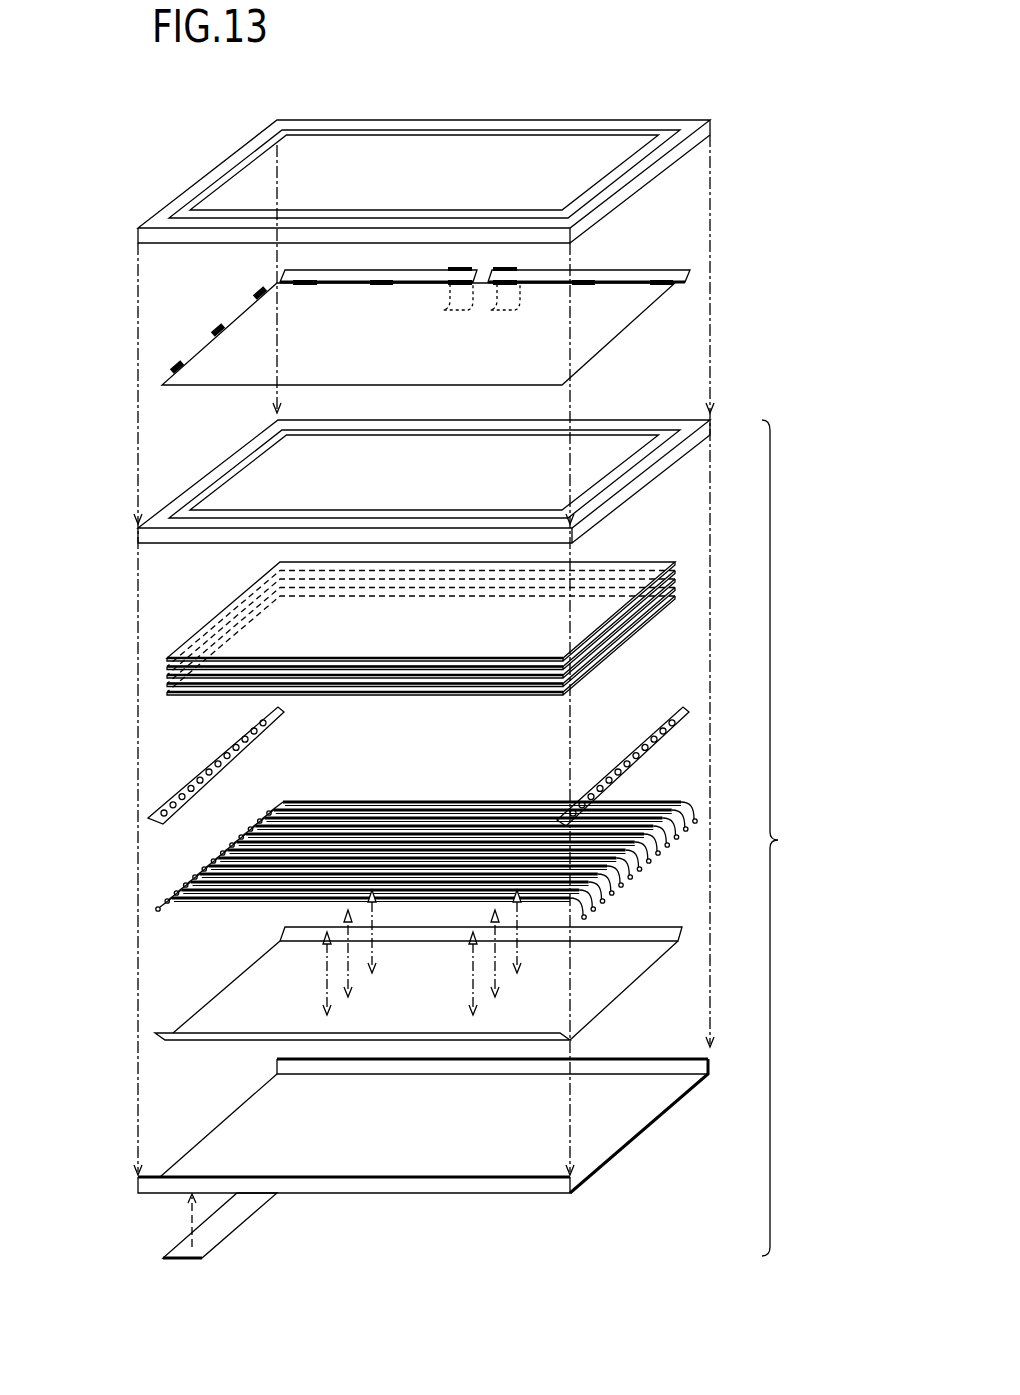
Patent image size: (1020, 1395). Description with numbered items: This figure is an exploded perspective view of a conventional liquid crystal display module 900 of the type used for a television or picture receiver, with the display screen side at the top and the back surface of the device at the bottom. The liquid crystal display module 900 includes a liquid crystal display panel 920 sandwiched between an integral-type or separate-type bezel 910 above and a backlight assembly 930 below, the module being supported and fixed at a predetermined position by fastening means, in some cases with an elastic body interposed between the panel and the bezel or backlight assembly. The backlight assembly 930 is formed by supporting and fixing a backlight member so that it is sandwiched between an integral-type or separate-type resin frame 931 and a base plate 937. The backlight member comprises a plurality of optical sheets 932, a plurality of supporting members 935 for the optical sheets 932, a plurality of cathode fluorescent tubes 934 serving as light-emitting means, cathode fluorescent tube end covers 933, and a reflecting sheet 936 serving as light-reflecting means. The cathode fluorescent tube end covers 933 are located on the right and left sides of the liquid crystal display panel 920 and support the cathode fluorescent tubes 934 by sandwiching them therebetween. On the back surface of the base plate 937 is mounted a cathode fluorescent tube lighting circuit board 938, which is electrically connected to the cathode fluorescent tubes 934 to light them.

The liquid crystal display module 900 is at (455, 90).
The bezel 910 is at (652, 172).
The liquid crystal display panel 920 is at (597, 318).
The backlight assembly 930 is at (436, 839).
The resin frame 931 is at (218, 477).
The optical sheets 932 is at (152, 678).
The cathode fluorescent tube end covers 933 is at (197, 772).
The cathode fluorescent tubes 934 is at (219, 857).
The supporting members 935 is at (345, 918).
The reflecting sheet 936 is at (240, 1010).
The base plate 937 is at (607, 1123).
The cathode fluorescent tube lighting circuit board 938 is at (185, 1250).